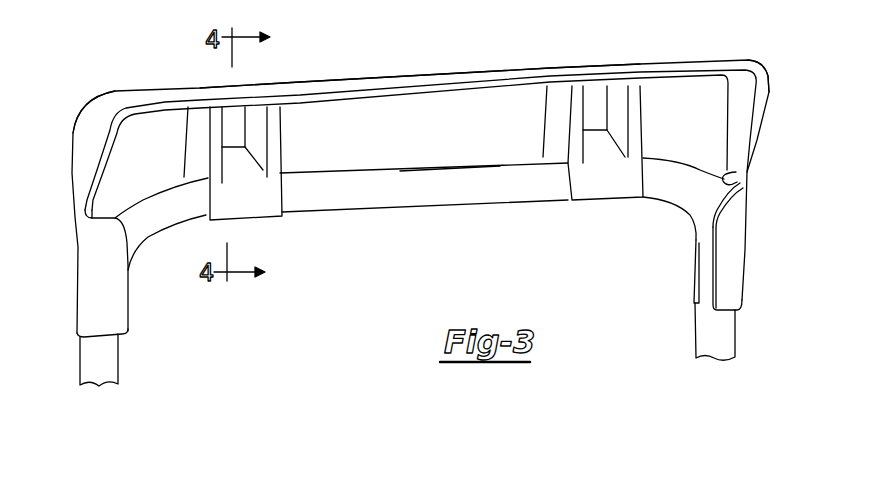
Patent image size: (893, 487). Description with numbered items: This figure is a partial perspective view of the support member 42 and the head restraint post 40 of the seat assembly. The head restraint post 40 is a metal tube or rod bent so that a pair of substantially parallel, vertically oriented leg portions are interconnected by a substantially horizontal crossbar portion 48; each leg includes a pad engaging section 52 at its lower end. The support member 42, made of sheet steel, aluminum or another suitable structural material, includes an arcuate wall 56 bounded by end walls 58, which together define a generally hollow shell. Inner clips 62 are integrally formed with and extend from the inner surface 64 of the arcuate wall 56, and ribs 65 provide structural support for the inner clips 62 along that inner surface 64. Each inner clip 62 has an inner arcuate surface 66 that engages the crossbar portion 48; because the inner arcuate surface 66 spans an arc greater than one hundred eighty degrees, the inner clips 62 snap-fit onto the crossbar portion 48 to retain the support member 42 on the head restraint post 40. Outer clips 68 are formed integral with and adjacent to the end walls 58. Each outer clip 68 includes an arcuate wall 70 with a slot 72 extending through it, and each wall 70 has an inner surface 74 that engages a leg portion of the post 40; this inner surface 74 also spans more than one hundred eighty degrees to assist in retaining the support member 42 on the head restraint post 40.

The head restraint post 40 is at (743, 338).
The support member 42 is at (118, 78).
The crossbar portion 48 is at (373, 193).
The pad engaging section 52 is at (703, 340).
The arcuate wall 56 is at (365, 93).
The end walls 58 is at (103, 156).
The inner clips 62 is at (273, 220).
The inner surface 64 is at (457, 147).
The ribs 65 is at (213, 139).
The inner arcuate surface 66 is at (570, 181).
The outer clip 68 is at (123, 313).
The arcuate wall 70 is at (695, 294).
The slot 72 is at (711, 246).
The inner surface 74 is at (736, 175).